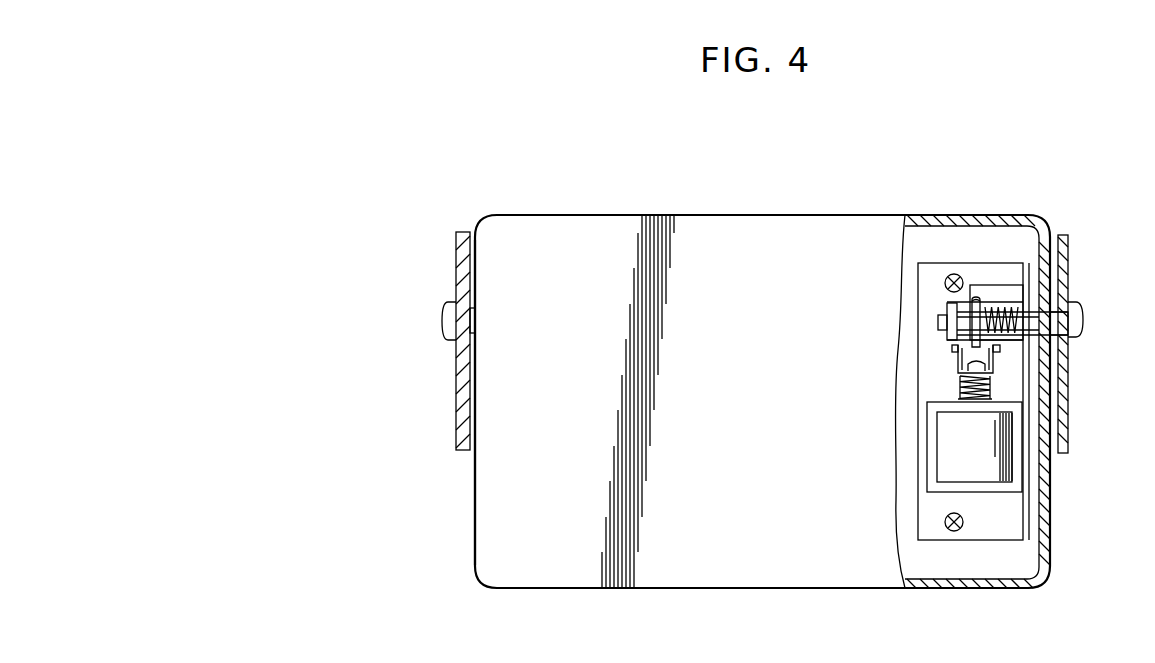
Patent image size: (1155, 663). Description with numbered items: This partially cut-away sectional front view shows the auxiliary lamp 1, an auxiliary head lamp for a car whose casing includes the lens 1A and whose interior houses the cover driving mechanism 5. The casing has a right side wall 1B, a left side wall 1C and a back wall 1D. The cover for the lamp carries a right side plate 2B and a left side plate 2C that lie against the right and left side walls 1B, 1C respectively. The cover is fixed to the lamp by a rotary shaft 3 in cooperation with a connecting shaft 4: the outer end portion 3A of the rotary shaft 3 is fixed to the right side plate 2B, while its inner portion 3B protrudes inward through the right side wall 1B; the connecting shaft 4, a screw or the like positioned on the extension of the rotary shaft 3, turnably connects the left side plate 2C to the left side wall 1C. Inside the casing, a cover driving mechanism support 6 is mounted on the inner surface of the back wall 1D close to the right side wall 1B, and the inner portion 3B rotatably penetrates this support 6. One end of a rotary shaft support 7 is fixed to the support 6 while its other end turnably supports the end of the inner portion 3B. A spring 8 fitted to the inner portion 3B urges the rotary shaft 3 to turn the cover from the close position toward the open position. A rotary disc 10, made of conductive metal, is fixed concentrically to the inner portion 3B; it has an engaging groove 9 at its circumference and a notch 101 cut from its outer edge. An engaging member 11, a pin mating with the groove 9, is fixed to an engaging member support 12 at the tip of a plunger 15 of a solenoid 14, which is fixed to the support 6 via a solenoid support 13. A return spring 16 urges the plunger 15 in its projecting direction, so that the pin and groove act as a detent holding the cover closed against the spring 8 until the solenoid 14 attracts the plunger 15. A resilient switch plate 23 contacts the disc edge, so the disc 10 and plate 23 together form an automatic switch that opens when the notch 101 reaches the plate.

The auxiliary lamp 1 is at (467, 477).
The lens 1A is at (505, 526).
The right side wall 1B is at (1048, 440).
The left side wall 1C is at (465, 422).
The back wall 1D is at (968, 243).
The right side plate 2B is at (1065, 278).
The left side plate 2C is at (457, 263).
The rotary shaft 3 is at (1086, 318).
The outer end portion 3A is at (1053, 323).
The inner portion 3B is at (943, 325).
The connecting shaft 4 is at (445, 320).
The cover driving mechanism 5 is at (940, 338).
The cover driving mechanism support 6 is at (928, 275).
The rotary shaft support 7 is at (943, 302).
The spring 8 is at (1012, 292).
The engaging groove 9 is at (948, 367).
The rotary disc 10 is at (981, 297).
The notch 101 is at (975, 301).
The engaging member 11 is at (990, 360).
The engaging member support 12 is at (950, 357).
The solenoid support 13 is at (930, 482).
The solenoid 14 is at (1007, 473).
The plunger 15 is at (993, 388).
The return spring 16 is at (973, 403).
The switch plate 23 is at (1020, 278).